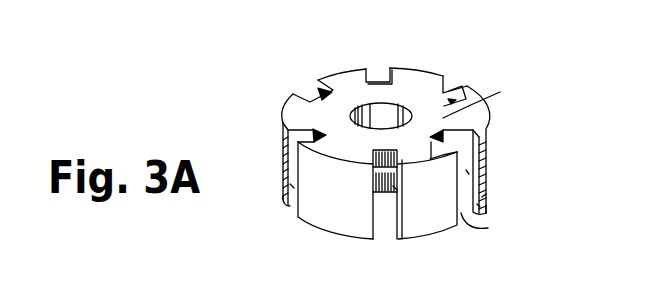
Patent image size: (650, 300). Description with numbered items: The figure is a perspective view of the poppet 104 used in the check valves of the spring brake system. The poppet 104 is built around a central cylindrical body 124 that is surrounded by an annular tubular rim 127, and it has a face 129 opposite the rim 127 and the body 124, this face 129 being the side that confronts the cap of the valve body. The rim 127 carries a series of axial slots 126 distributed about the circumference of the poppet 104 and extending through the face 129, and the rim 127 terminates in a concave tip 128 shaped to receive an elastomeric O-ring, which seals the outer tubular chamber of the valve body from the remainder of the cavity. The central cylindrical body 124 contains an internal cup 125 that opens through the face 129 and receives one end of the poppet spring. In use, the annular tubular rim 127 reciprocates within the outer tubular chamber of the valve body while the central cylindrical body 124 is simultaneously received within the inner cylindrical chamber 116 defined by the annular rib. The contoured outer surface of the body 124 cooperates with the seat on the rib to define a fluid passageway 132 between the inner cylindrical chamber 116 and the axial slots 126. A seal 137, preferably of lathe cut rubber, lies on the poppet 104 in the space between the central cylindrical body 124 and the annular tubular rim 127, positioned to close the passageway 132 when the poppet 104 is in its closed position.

The poppet 104 is at (402, 147).
The inner cylindrical chamber 116 is at (393, 186).
The central cylindrical body 124 is at (357, 80).
The internal cup 125 is at (389, 117).
The axial slots 126 is at (294, 188).
The annular tubular rim 127 is at (469, 174).
The concave tip 128 is at (300, 206).
The face 129 is at (443, 118).
The fluid passageway 132 is at (387, 204).
The seal 137 is at (505, 247).